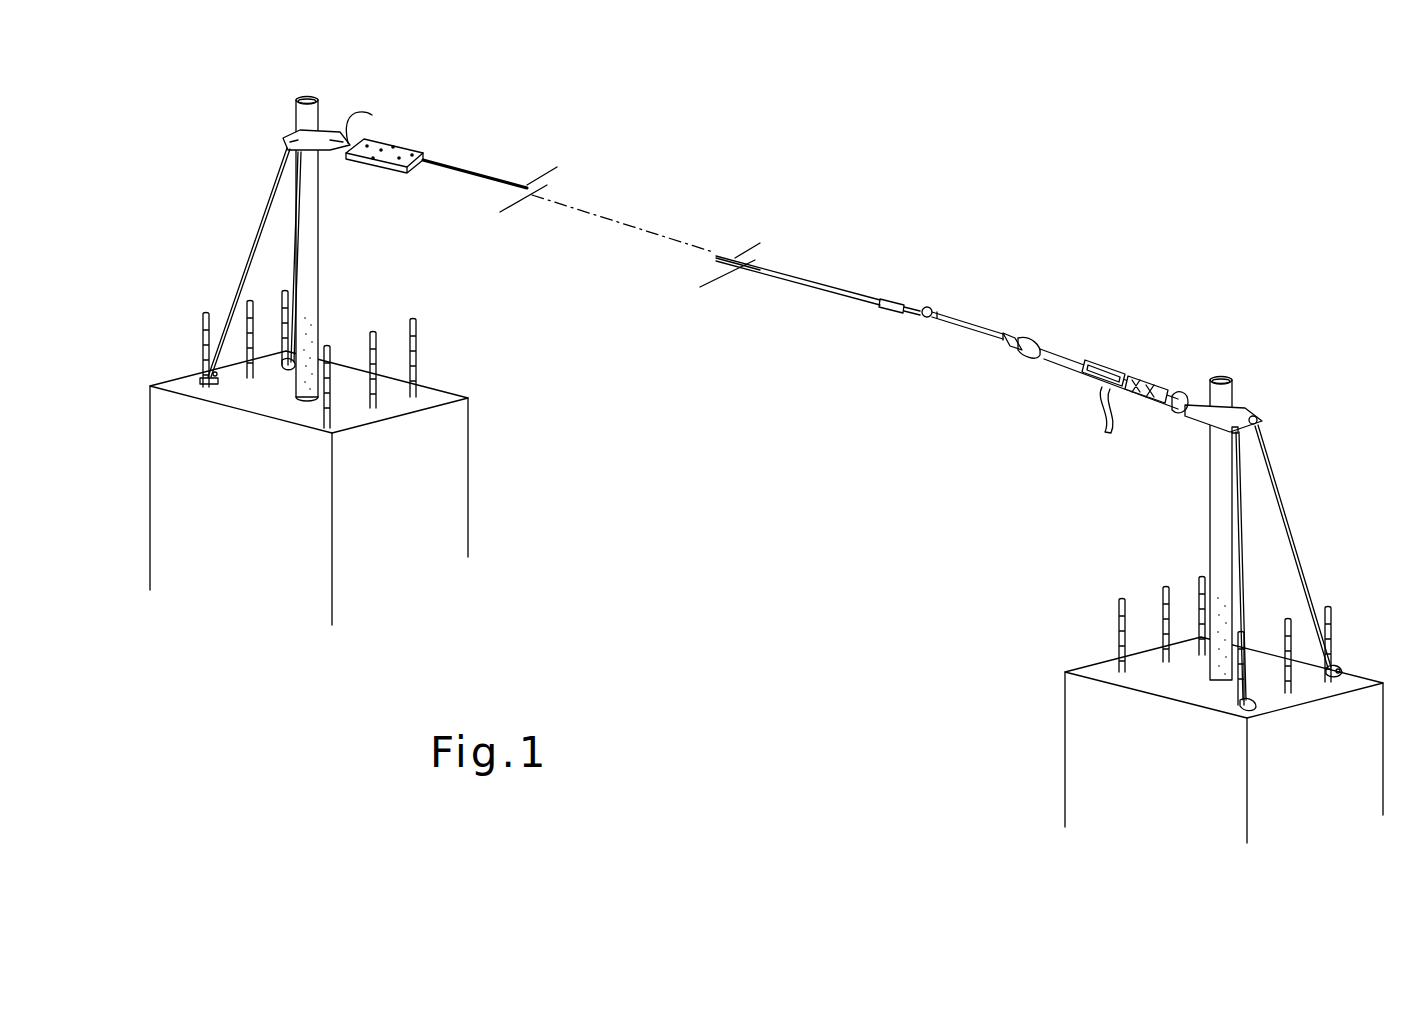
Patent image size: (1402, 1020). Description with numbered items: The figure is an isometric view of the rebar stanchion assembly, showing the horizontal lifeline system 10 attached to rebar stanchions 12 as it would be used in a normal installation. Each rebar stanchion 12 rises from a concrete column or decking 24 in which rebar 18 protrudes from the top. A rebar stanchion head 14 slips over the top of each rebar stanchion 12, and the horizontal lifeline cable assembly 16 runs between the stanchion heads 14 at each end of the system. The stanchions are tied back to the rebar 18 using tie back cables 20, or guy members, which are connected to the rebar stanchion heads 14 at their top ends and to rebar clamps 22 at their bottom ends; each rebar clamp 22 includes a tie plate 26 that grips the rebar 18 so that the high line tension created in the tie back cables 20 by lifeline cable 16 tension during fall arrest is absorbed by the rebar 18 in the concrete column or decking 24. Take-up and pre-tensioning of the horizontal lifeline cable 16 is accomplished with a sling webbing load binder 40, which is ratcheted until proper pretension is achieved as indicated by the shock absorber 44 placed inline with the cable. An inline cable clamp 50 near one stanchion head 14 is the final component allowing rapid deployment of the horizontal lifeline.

The horizontal lifeline system 10 is at (768, 270).
The rebar stanchion 12 is at (293, 108).
The rebar stanchion head 14 is at (331, 132).
The horizontal lifeline cable assembly 16 is at (843, 282).
The rebar 18 is at (287, 290).
The tie back cable 20 is at (1283, 510).
The rebar clamp 22 is at (205, 377).
The concrete column or decking 24 is at (470, 527).
The tie plate 26 is at (286, 362).
The sling webbing load binder 40 is at (1118, 368).
The shock absorber 44 is at (985, 322).
The inline cable clamp 50 is at (393, 147).